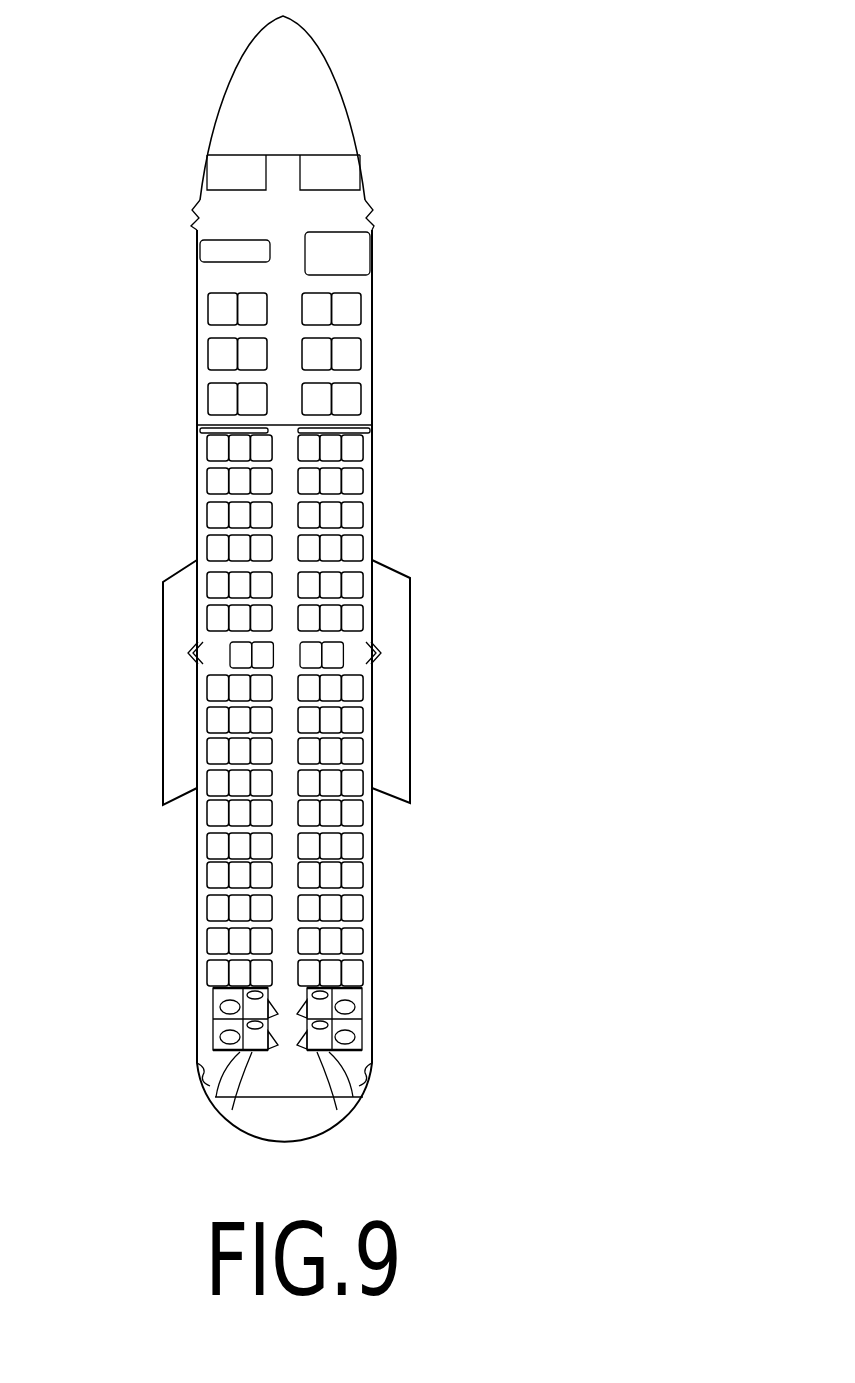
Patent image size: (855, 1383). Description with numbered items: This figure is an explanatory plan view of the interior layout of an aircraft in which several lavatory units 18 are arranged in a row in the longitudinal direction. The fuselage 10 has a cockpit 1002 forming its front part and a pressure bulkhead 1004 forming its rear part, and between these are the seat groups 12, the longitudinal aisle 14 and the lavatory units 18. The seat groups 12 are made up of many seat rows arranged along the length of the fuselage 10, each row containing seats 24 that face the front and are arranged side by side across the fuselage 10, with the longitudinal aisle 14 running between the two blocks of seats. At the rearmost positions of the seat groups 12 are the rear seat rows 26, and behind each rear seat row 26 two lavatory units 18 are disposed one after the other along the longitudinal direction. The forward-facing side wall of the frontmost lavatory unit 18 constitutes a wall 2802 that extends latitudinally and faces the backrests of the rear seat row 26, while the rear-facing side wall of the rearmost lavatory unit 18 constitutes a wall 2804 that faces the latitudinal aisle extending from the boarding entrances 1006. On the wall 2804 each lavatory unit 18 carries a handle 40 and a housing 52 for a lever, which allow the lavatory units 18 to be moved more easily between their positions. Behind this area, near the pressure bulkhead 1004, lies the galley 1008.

The fuselage 10 is at (410, 233).
The cockpit 1002 is at (303, 63).
The seat groups 12 is at (201, 503).
The longitudinal aisle 14 is at (288, 688).
The seats 24 is at (240, 955).
The rear seat rows 26 is at (213, 973).
The wall 2802 is at (213, 988).
The lavatory unit 18 is at (211, 1005).
The wall 2804 is at (207, 1064).
The boarding entrance 1006 is at (203, 1072).
The handle 40 is at (217, 1083).
The housing 52 is at (232, 1095).
The galley 1008 is at (280, 1120).
The pressure bulkhead 1004 is at (318, 1143).